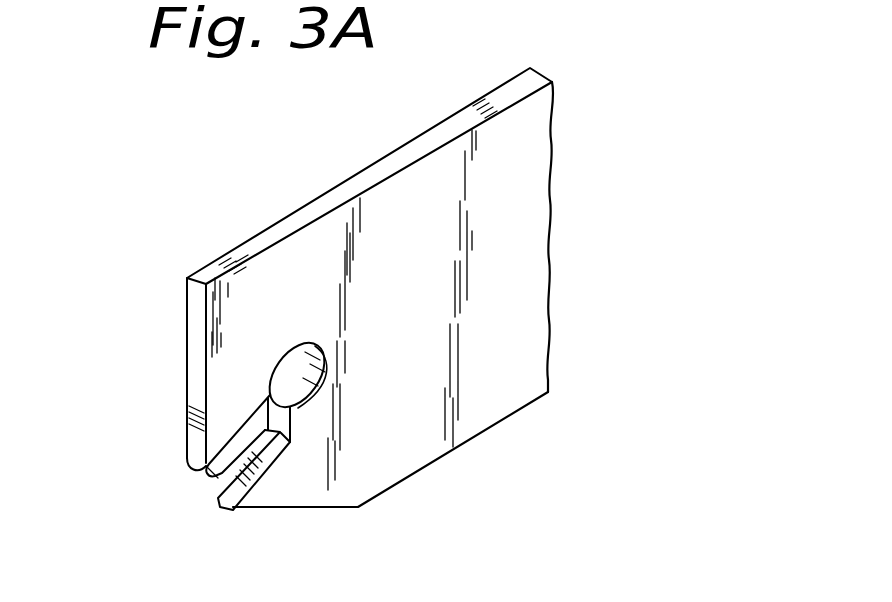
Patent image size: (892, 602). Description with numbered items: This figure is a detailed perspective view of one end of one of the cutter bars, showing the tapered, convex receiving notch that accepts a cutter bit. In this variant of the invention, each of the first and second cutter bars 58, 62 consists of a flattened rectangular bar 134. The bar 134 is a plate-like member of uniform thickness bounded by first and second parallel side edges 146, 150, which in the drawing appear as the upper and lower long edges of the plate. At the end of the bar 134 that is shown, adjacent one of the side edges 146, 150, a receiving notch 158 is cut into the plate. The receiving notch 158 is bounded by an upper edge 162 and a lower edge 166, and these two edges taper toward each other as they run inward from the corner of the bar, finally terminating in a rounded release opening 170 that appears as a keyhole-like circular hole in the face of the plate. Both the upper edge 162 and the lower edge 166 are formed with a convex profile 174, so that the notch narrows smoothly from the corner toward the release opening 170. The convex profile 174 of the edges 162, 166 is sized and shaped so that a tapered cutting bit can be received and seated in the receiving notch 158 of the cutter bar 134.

The first cutter bar 58 is at (246, 306).
The second cutter bar 62 is at (296, 257).
The flattened rectangular bar 134 is at (360, 465).
The first side edge 146 is at (203, 270).
The second side edge 150 is at (493, 427).
The receiving notch 158 is at (193, 493).
The upper edge 162 is at (197, 468).
The lower edge 166 is at (210, 494).
The rounded release opening 170 is at (312, 380).
The convex profile 174 is at (222, 465).